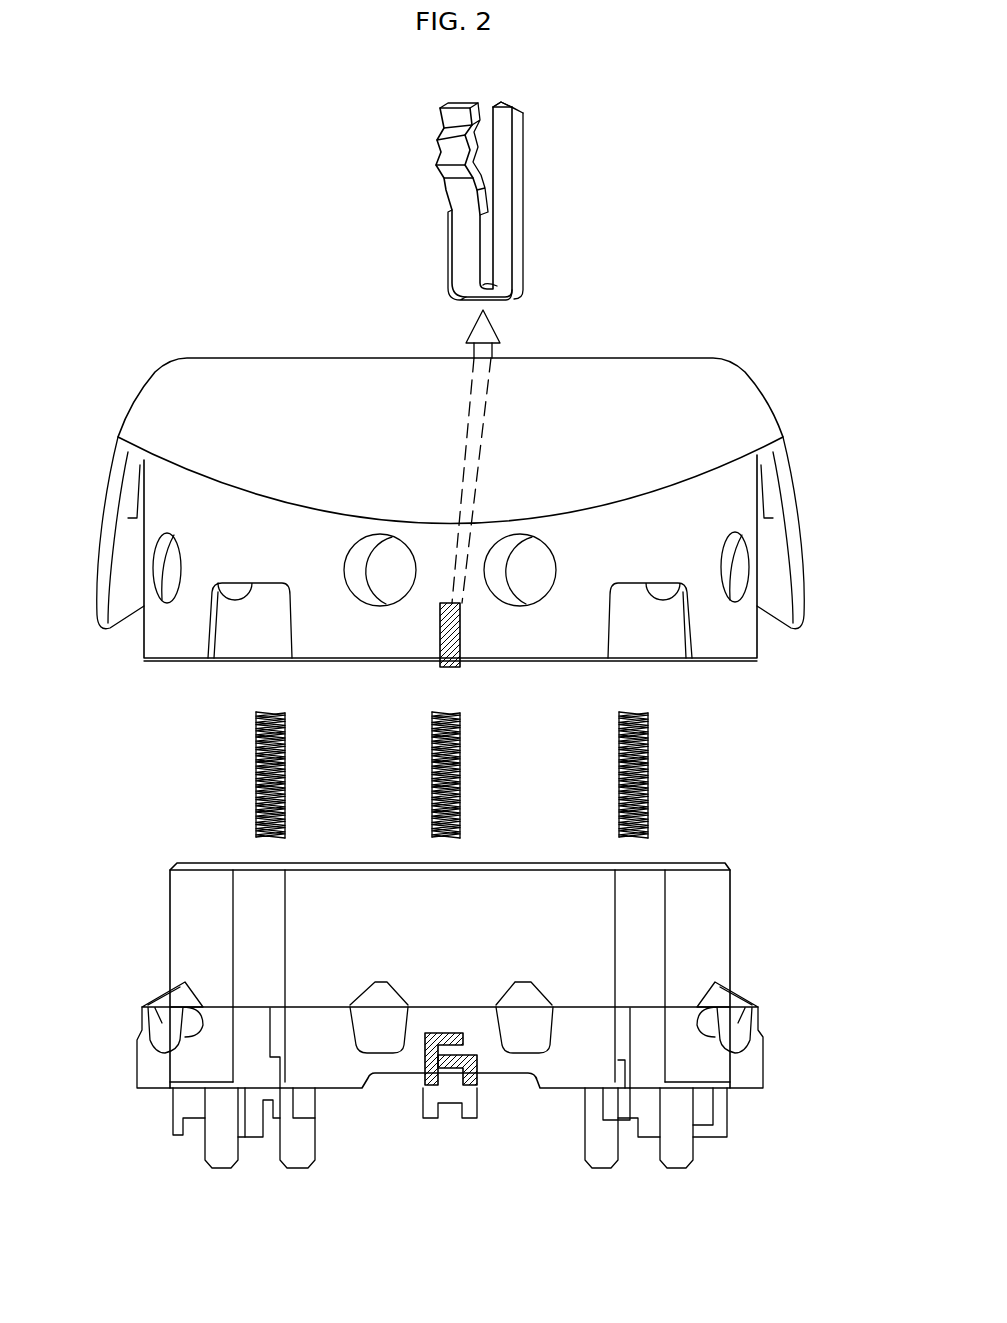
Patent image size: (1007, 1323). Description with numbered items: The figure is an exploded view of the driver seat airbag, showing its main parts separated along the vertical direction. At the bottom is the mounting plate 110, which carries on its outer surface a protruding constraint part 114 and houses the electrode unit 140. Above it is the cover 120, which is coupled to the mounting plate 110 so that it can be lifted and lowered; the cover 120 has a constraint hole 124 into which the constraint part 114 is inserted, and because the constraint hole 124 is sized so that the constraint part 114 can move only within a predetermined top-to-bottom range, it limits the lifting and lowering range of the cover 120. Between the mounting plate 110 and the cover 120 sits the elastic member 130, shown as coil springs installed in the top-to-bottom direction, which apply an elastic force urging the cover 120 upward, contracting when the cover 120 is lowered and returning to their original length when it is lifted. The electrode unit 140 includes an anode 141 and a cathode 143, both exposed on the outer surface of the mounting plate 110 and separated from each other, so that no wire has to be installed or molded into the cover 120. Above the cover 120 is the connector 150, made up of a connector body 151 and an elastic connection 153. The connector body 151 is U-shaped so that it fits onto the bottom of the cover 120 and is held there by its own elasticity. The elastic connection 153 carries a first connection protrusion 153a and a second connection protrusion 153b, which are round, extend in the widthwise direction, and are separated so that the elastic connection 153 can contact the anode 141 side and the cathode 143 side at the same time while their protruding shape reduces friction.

The mounting plate 110 is at (743, 931).
The constraint part 114 is at (147, 1007).
The cover 120 is at (745, 372).
The constraint hole 124 is at (168, 660).
The elastic member 130 is at (648, 777).
The electrode unit 140 is at (452, 1198).
The anode 141 is at (420, 1067).
The cathode 143 is at (452, 1063).
The connector 150 is at (533, 137).
The connector body 151 is at (505, 165).
The elastic connection 153 is at (312, 88).
The first connection protrusion 153a is at (448, 130).
The second connection protrusion 153b is at (450, 168).